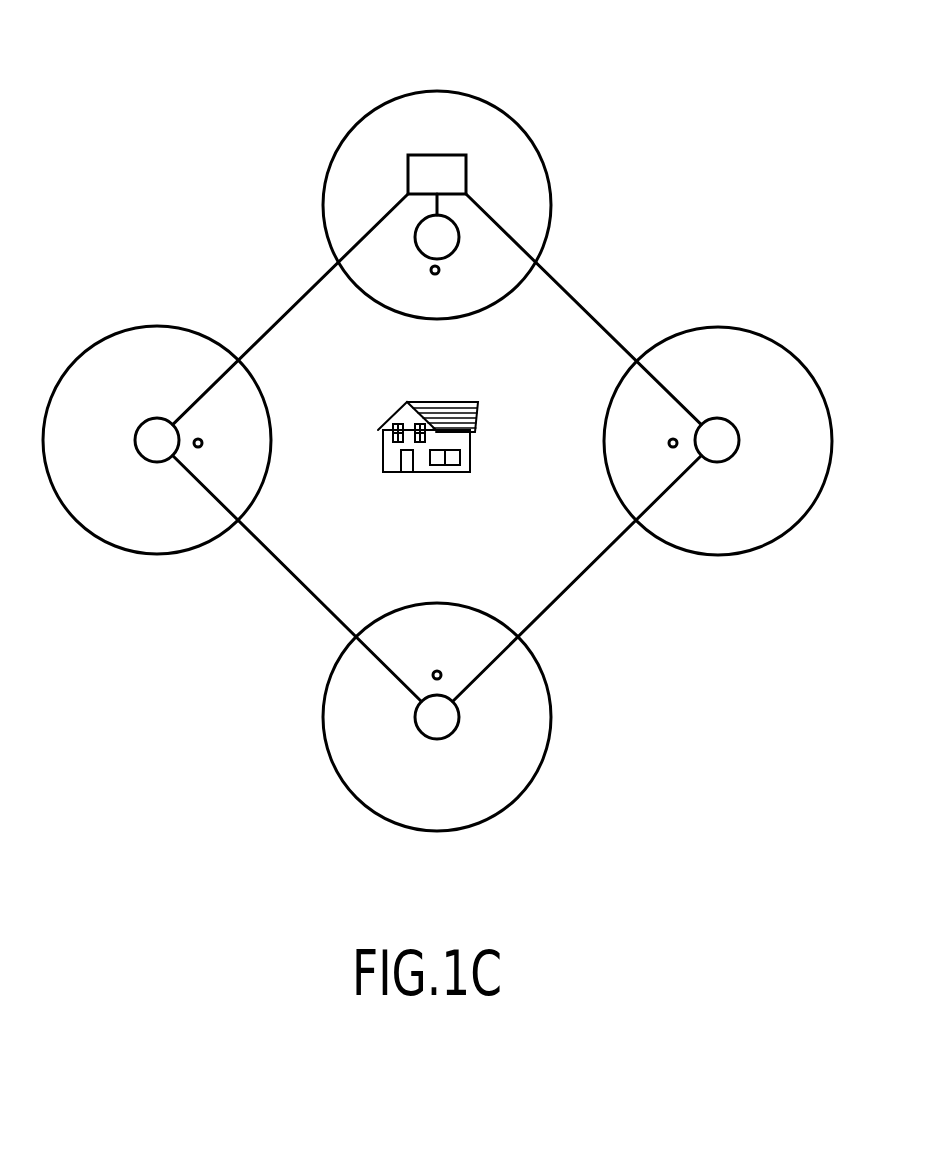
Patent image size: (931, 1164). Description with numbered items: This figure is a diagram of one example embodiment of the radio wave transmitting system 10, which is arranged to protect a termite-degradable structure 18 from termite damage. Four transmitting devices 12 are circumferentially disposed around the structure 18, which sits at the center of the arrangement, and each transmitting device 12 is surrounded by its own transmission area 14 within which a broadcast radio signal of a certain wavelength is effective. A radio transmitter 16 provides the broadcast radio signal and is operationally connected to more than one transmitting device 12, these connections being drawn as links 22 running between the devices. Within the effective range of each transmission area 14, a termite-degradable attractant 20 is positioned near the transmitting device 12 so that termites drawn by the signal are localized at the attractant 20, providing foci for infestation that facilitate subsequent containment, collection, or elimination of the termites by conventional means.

The radio wave transmitting system 10 is at (700, 105).
The transmitting device 12 is at (453, 238).
The transmission area 14 is at (355, 140).
The radio transmitter 16 is at (445, 170).
The termite-degradable structure 18 is at (433, 468).
The attractant 20 is at (435, 275).
The communication link 22 is at (302, 290).